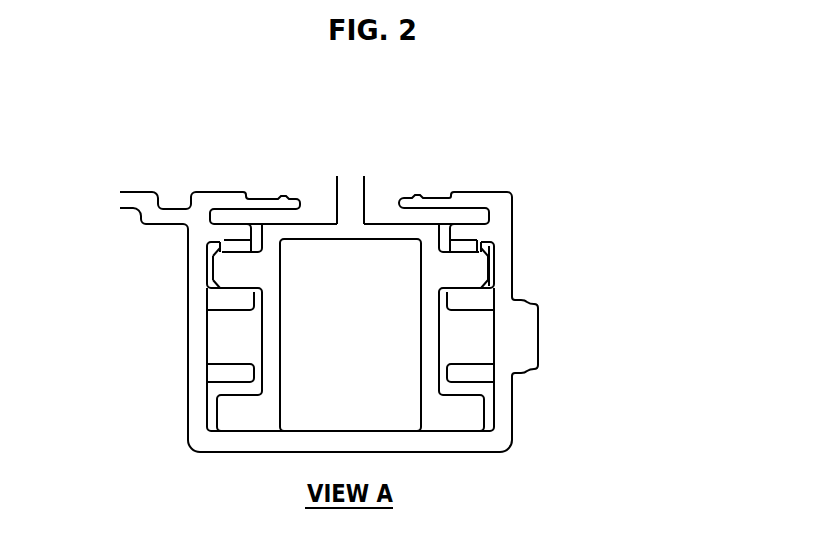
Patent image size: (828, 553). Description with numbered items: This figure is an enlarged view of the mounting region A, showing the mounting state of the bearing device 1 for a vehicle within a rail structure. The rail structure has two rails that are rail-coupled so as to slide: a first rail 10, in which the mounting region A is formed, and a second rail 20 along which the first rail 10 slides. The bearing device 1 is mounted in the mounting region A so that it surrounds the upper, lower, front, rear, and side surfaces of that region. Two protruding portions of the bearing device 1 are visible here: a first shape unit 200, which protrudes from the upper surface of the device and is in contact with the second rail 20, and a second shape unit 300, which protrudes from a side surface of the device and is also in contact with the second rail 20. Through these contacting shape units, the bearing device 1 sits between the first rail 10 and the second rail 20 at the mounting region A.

The bearing device 1 is at (500, 232).
The first rail 10 is at (300, 230).
The second rail 20 is at (197, 407).
The first shape unit 200 is at (464, 244).
The second shape unit 300 is at (492, 266).
The mounting region A is at (228, 275).